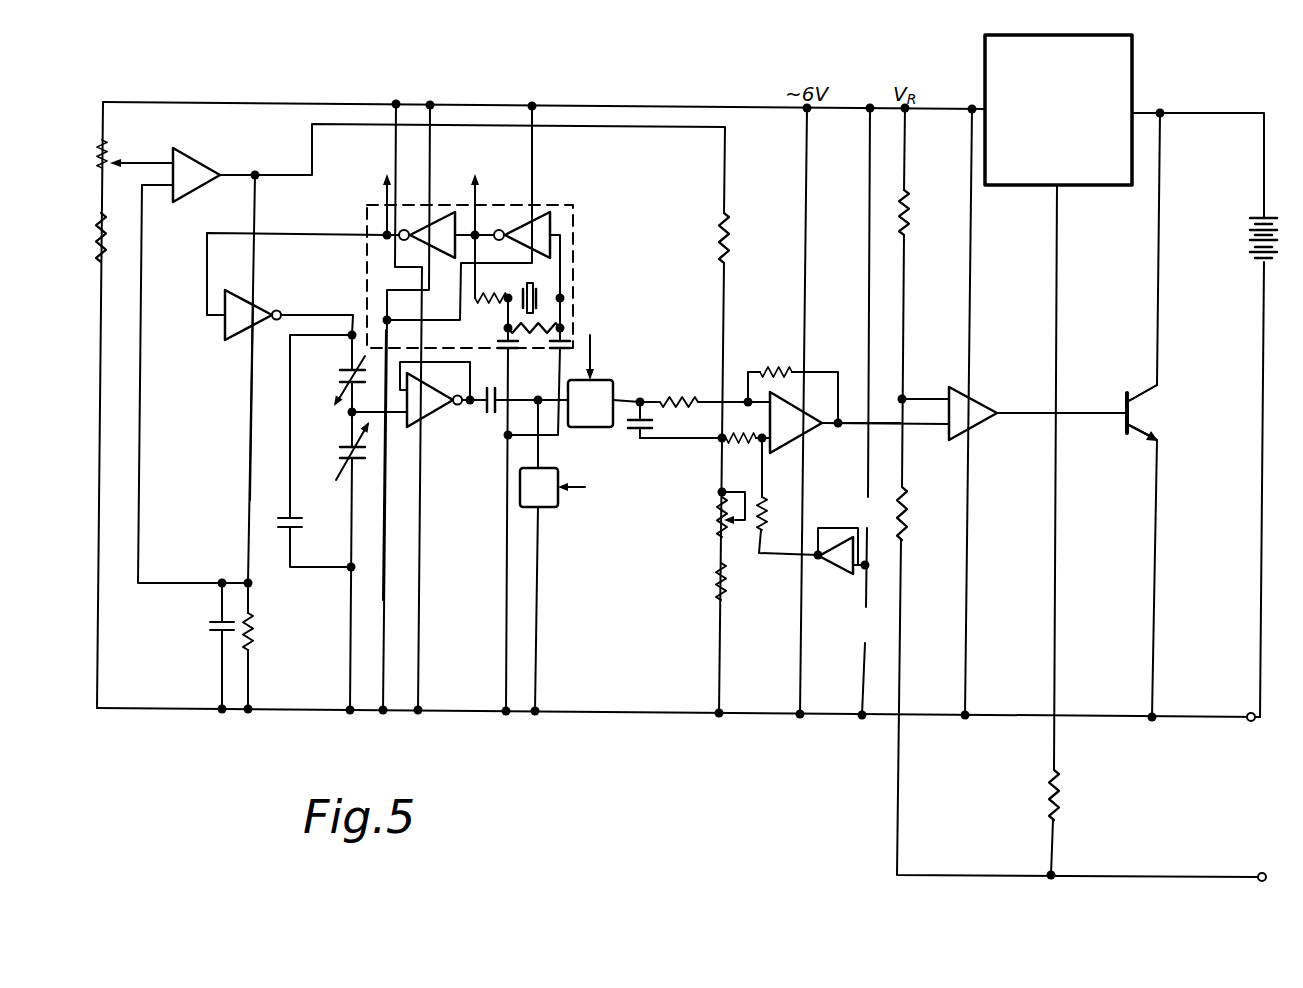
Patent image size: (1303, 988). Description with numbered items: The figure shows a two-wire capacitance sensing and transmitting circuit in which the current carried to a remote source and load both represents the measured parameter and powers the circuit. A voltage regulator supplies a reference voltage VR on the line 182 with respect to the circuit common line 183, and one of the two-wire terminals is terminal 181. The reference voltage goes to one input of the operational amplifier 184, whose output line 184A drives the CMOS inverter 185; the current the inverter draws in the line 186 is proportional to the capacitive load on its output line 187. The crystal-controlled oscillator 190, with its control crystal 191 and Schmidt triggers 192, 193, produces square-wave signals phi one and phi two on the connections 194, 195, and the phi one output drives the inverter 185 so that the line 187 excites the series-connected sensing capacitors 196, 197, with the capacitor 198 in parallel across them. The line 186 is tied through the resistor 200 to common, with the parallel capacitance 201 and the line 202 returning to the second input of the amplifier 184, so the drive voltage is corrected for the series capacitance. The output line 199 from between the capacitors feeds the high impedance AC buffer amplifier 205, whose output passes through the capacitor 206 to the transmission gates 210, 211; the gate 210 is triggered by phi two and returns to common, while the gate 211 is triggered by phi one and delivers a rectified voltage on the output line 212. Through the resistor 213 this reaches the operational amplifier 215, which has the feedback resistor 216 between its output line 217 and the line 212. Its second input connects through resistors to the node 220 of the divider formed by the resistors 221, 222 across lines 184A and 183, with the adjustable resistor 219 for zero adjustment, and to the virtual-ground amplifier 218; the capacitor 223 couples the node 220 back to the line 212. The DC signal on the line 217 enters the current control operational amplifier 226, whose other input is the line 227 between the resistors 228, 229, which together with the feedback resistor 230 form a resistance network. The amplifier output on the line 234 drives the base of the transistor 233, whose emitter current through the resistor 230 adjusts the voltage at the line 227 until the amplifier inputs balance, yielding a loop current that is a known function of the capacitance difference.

The terminal 181 is at (1062, 35).
The reference voltage line 182 is at (742, 107).
The circuit common line 183 is at (692, 718).
The operational amplifier 184 is at (202, 162).
The output line of operational amplifier 184A is at (256, 170).
The CMOS inverter 185 is at (257, 303).
The line 186 is at (250, 420).
The output line of inverter 187 is at (323, 313).
The crystal-controlled oscillator 190 is at (574, 225).
The control crystal 191 is at (560, 290).
The Schmidt trigger 192 is at (556, 212).
The Schmidt trigger 193 is at (435, 212).
The connection for signal phi 1 194 is at (384, 195).
The connection for signal phi 2 195 is at (478, 196).
The sensing capacitor C1 196 is at (345, 368).
The sensing capacitor C2 197 is at (350, 458).
The capacitor CA 198 is at (292, 518).
The output line 199 is at (394, 415).
The resistor R1 200 is at (252, 628).
The capacitance 201 is at (213, 630).
The line 202 is at (140, 548).
The high impedance AC buffer amplifier 205 is at (429, 427).
The capacitor 206 is at (487, 415).
The first transmission gate 210 is at (540, 507).
The second transmission gate 211 is at (620, 373).
The output line 212 is at (645, 398).
The resistor R4 213 is at (685, 398).
The operational amplifier 215 is at (781, 421).
The feedback resistor R5 216 is at (774, 368).
The output line 217 is at (856, 427).
The amplifier 218 is at (830, 565).
The adjustable resistor 219 is at (735, 521).
The node 220 is at (720, 442).
The resistor R2 221 is at (728, 243).
The resistor R3 222 is at (726, 583).
The capacitor 223 is at (643, 440).
The current control operational amplifier 226 is at (983, 399).
The line 227 is at (918, 398).
The resistor 228 is at (900, 222).
The resistor 229 is at (900, 523).
The feedback resistor 230 is at (1058, 795).
The transistor 233 is at (1126, 427).
The line 234 is at (1032, 412).